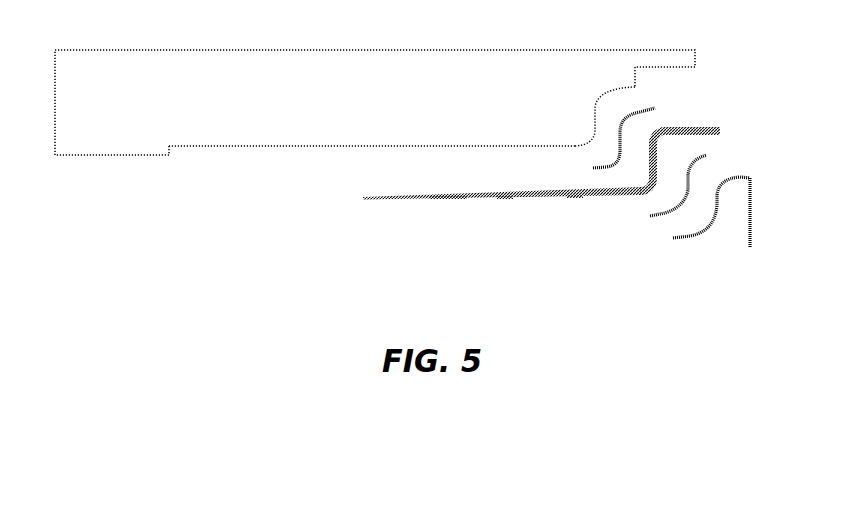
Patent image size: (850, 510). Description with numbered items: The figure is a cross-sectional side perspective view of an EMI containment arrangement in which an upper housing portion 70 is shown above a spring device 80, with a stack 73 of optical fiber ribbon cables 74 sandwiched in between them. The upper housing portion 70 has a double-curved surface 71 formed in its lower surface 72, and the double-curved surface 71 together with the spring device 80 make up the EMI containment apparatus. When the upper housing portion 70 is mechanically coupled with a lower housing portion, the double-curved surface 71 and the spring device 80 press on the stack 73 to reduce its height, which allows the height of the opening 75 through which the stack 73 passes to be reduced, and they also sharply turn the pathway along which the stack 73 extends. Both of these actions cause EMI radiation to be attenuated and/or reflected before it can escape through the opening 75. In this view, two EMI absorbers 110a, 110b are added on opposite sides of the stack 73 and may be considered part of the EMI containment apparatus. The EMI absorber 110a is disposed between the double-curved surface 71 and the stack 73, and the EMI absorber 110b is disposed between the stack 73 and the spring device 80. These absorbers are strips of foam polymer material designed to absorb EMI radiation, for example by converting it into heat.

The upper housing portion 70 is at (462, 50).
The double-curved surface 71 is at (593, 107).
The lower surface 72 is at (257, 148).
The stack of optical fiber ribbon cables 73 is at (695, 128).
The optical fiber ribbon cables 74 is at (583, 198).
The opening 75 is at (668, 88).
The spring device 80 is at (750, 230).
The EMI absorber 110a is at (608, 165).
The EMI absorber 110b is at (708, 156).